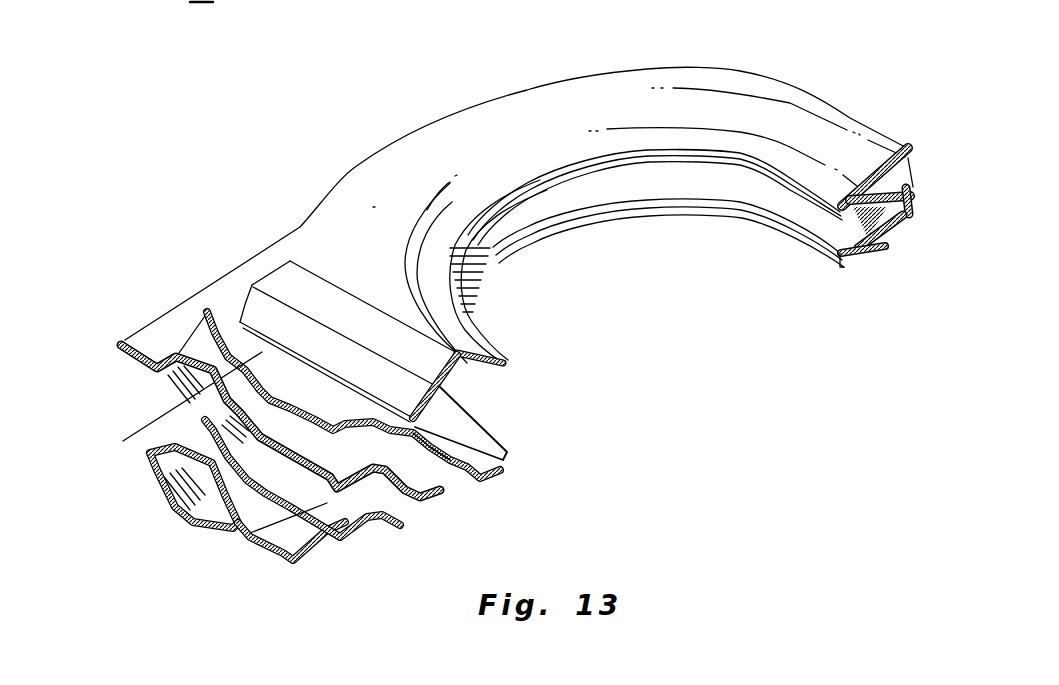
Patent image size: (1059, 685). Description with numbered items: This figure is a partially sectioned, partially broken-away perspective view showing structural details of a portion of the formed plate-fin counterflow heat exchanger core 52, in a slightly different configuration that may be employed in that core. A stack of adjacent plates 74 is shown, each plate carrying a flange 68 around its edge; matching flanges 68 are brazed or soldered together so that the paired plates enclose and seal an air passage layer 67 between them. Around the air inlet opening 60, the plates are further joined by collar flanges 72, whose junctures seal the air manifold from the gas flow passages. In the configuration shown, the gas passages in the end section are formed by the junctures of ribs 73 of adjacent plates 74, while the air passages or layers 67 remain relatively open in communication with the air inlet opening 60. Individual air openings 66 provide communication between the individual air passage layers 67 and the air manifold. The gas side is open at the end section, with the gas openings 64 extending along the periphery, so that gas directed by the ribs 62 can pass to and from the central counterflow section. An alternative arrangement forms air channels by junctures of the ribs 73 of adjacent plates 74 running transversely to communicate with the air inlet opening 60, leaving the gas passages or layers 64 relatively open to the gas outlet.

The formed plate-fin counterflow heat exchanger core 52 is at (823, 61).
The air inlet opening 60 is at (657, 247).
The ribs 62 is at (227, 330).
The gas openings 64 is at (203, 349).
The air openings 66 is at (440, 452).
The air passage layers 67 is at (203, 477).
The flanges 68 is at (903, 147).
The collar flanges 72 is at (770, 215).
The ribs 73 is at (412, 420).
The plates 74 is at (404, 175).